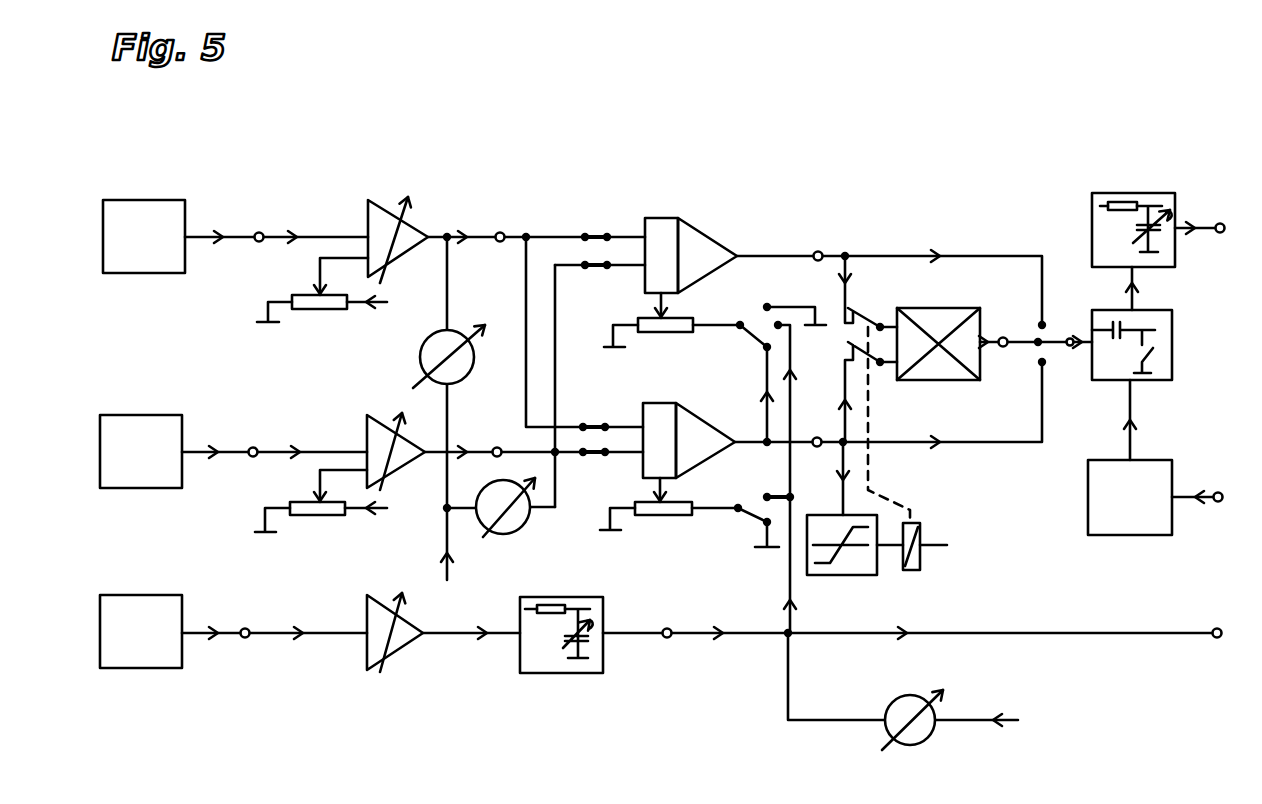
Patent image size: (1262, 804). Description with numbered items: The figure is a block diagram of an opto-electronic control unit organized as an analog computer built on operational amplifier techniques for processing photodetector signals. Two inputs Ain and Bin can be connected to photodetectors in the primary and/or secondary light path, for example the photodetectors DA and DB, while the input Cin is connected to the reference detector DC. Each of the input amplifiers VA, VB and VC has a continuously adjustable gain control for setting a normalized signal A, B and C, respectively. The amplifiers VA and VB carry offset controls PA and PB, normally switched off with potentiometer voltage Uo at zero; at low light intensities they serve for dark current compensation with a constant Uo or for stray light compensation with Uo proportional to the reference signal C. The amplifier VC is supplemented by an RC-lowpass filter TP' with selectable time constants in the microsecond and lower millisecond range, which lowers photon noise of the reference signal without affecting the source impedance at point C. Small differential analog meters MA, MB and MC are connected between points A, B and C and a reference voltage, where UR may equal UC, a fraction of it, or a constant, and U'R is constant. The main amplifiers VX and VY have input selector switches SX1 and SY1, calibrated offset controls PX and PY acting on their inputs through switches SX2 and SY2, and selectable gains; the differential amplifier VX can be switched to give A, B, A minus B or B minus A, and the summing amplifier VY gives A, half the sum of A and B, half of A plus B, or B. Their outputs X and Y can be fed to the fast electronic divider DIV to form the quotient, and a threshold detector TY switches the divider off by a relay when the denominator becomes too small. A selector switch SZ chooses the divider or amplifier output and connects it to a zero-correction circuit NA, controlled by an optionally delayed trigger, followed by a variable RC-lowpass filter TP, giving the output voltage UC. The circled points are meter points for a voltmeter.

The photodetector DA is at (144, 219).
The photodetector DB is at (141, 434).
The reference detector DC is at (141, 614).
The input Ain is at (276, 221).
The input Bin is at (274, 435).
The input Cin is at (274, 616).
The input amplifier VA is at (396, 225).
The input amplifier VB is at (394, 436).
The input amplifier VC is at (393, 617).
The offset control PA is at (322, 304).
The offset control PB is at (321, 513).
The offset control PX is at (688, 367).
The offset control PY is at (689, 522).
The potentiometer voltage Uo is at (411, 409).
The normalized signal A is at (536, 221).
The normalized signal B is at (534, 435).
The reference signal C is at (910, 614).
The differential analog meter MA is at (454, 408).
The differential analog meter MB is at (499, 530).
The differential analog meter MC is at (903, 691).
The reference voltage UR is at (451, 607).
The reference voltage U'R is at (1055, 733).
The input selector switch SX1 is at (600, 234).
The switch SX2 is at (784, 455).
The input selector switch SY1 is at (601, 423).
The switch SY2 is at (769, 484).
The selector switch SZ is at (1060, 328).
The differential amplifier VX is at (690, 230).
The summing amplifier VY is at (689, 427).
The combined signal X is at (889, 262).
The combined signal Y is at (888, 405).
The electronic divider DIV is at (965, 349).
The threshold detector TY is at (877, 532).
The variable RC-lowpass filter TP is at (1133, 210).
The RC-lowpass filter TP' is at (513, 613).
The zero-correction circuit NA is at (1155, 323).
The output voltage S US is at (1208, 214).
The trigger voltage T UT is at (1207, 526).
The output voltage UC is at (1229, 617).